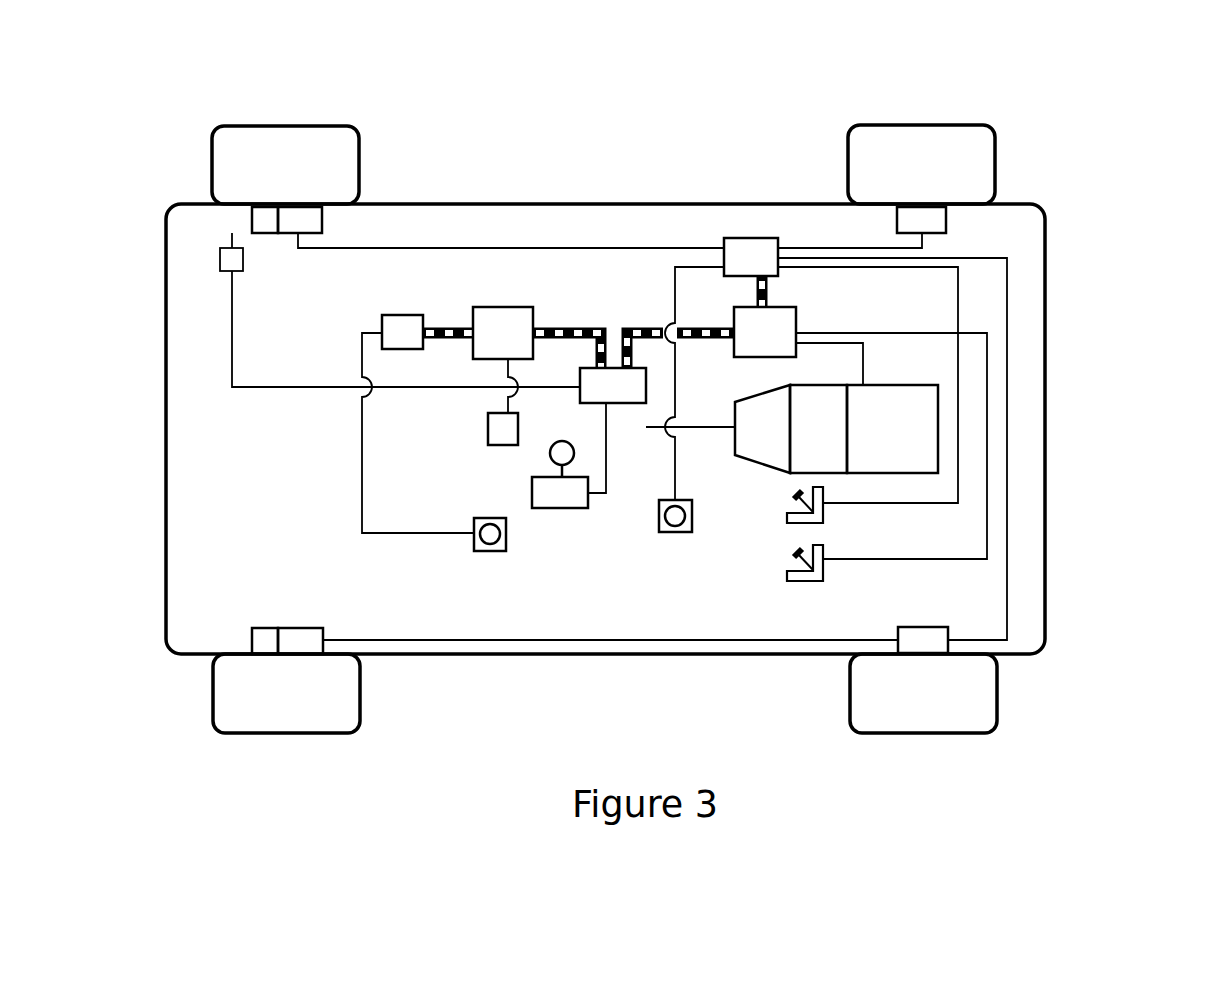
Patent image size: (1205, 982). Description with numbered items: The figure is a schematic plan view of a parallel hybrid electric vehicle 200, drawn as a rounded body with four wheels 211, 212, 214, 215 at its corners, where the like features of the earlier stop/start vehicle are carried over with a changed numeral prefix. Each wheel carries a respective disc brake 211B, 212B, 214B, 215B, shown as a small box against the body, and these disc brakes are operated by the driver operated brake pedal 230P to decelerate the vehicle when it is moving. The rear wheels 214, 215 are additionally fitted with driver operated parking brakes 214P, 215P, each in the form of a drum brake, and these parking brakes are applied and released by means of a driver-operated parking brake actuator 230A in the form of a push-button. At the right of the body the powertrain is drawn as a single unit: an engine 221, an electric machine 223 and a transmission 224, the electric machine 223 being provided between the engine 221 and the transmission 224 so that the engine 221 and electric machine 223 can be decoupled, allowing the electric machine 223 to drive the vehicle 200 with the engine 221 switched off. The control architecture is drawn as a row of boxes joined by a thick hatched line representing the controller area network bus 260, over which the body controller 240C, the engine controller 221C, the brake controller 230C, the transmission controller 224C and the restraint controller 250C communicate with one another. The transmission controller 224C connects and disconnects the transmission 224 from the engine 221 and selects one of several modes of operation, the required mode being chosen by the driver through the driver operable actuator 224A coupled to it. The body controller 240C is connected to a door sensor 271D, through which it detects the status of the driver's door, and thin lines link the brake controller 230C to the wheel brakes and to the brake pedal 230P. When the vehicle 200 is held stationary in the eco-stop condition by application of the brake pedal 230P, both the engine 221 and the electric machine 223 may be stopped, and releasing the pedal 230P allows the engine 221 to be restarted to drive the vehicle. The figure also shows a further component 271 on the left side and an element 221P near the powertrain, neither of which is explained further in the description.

The hybrid electric vehicle 200 is at (1120, 128).
The wheel 211 is at (982, 173).
The disc brake 211B is at (923, 217).
The wheel 212 is at (982, 685).
The disc brake 212B is at (925, 643).
The rear wheel 214 is at (227, 175).
The parking brake 214P is at (262, 217).
The disc brake 214B is at (298, 217).
The rear wheel 215 is at (228, 684).
The parking brake 215P is at (265, 643).
The disc brake 215B is at (300, 643).
The engine 221 is at (895, 407).
The engine controller 221C is at (790, 318).
The engine sensor 221P is at (823, 568).
The electric machine 223 is at (826, 439).
The transmission 224 is at (770, 450).
The driver operable actuator 224A is at (558, 509).
The transmission controller 224C is at (622, 395).
The parking brake actuator 230A is at (676, 533).
The brake controller 230C is at (755, 242).
The brake pedal 230P is at (823, 512).
The body controller 240C is at (404, 323).
The restraint controller 250C is at (515, 310).
The controller area network bus 260 is at (449, 327).
The sensor unit 271 is at (487, 427).
The door sensor 271D is at (489, 553).